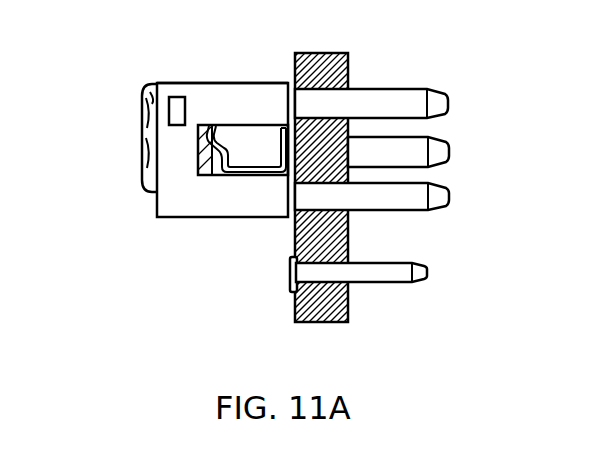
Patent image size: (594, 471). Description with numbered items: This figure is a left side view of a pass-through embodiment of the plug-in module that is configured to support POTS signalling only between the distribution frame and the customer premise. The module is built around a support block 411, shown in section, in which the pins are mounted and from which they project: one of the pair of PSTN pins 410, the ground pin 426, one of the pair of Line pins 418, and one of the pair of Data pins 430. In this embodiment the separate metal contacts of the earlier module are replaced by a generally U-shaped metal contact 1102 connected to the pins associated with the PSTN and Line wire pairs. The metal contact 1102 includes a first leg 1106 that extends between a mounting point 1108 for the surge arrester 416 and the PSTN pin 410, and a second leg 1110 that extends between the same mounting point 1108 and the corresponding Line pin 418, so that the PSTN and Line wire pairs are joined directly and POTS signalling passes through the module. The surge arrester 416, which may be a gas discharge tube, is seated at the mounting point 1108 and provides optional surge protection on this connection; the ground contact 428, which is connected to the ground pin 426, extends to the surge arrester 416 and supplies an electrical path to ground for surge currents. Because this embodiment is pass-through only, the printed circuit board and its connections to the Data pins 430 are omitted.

The support block 411 is at (327, 53).
The surge arrestor 416 is at (148, 128).
The first leg 1106 is at (248, 76).
The U-shaped metal contact 1102 is at (263, 106).
The mounting point 1108 is at (175, 90).
The second leg 1110 is at (240, 224).
The ground contact 428 is at (247, 176).
The PSTN pins 410 is at (455, 101).
The ground pin 426 is at (449, 150).
The Line pins 418 is at (455, 195).
The Data pins 430 is at (440, 272).